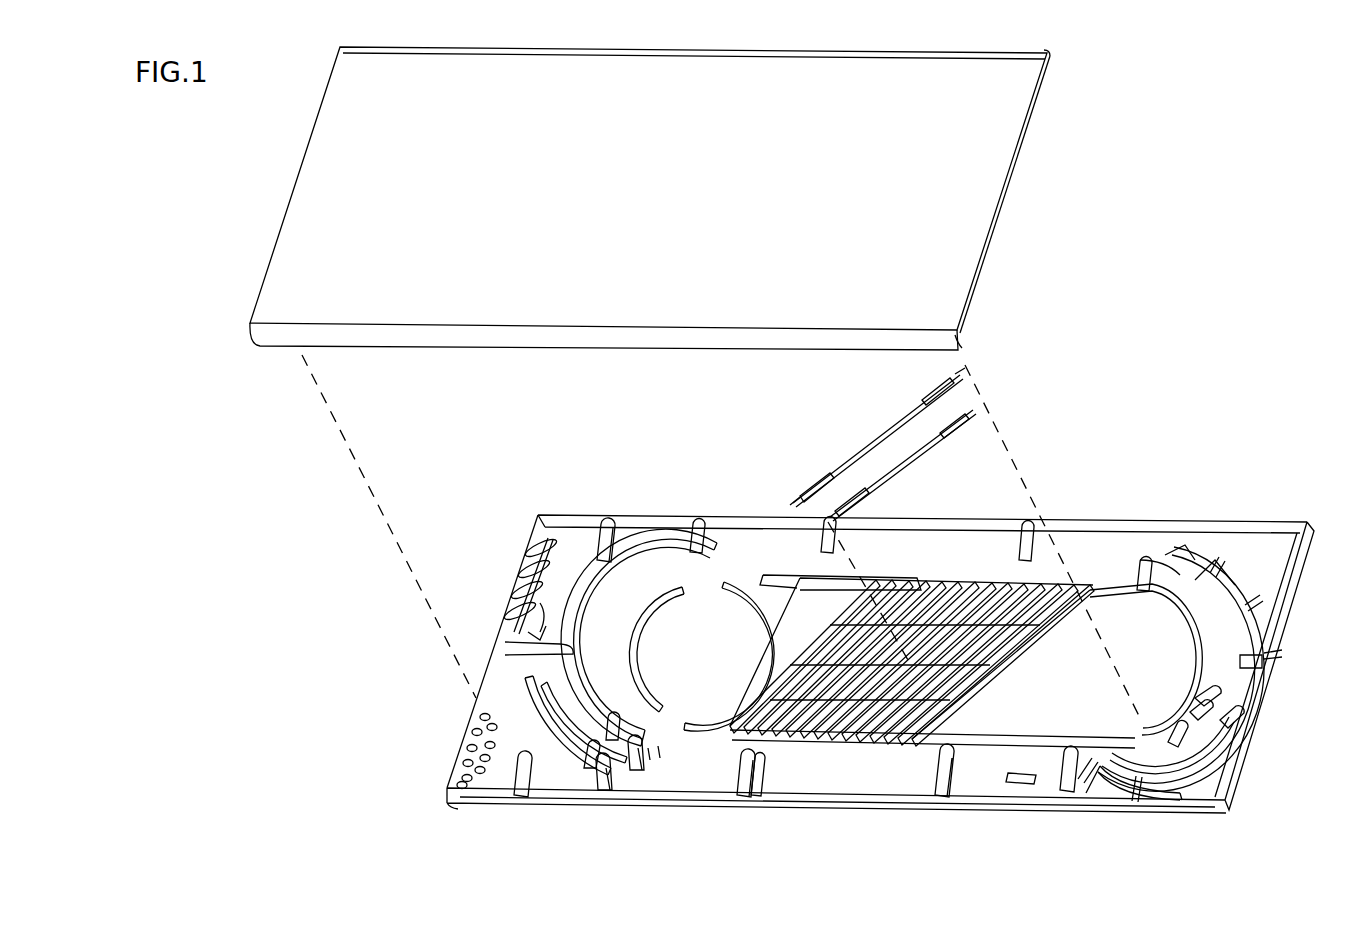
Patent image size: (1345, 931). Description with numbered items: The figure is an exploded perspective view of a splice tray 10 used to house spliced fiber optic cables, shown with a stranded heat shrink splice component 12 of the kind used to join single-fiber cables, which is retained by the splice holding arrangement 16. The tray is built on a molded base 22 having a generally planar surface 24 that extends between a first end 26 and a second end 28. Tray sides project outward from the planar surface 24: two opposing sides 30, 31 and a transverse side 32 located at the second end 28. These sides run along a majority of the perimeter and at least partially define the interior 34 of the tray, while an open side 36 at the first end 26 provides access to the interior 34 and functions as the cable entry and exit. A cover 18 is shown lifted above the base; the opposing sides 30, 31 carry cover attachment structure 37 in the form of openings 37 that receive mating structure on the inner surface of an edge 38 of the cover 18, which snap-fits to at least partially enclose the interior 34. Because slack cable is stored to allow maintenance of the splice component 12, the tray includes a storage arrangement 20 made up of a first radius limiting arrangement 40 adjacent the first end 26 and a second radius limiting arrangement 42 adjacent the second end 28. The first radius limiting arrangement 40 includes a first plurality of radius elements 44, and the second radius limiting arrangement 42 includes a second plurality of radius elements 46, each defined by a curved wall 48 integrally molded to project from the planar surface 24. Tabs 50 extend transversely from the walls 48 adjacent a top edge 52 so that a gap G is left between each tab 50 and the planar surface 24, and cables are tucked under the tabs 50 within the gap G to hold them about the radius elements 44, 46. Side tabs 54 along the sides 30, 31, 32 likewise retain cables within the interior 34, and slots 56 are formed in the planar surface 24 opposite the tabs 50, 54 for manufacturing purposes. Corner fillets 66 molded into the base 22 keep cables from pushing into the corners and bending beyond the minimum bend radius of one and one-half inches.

The splice tray 10 is at (1181, 437).
The stranded heat shrink splice component 12 is at (880, 477).
The splice holding arrangement 16 is at (1101, 545).
The cover 18 is at (990, 152).
The storage arrangement 20 is at (701, 778).
The base 22 is at (730, 545).
The planar surface 24 is at (640, 535).
The first end 26 is at (506, 672).
The second end 28 is at (1262, 636).
The opposing side 30 is at (1075, 520).
The opposing side 31 is at (877, 800).
The transverse side 32 is at (1265, 676).
The interior 34 is at (724, 639).
The open side 36 is at (510, 624).
The cover attachment structure 37 is at (690, 528).
The edge 38 is at (1052, 58).
The first radius limiting arrangement 40 is at (590, 471).
The second radius limiting arrangement 42 is at (1269, 495).
The first plurality of radius elements 44 is at (578, 757).
The second plurality of radius elements 46 is at (1130, 770).
The curved wall 48 is at (560, 752).
The tabs 50 is at (638, 752).
The top edge 52 is at (593, 753).
The side tabs 54 is at (748, 752).
The slots 56 is at (762, 778).
The corner fillets 66 is at (1275, 557).
The gap G is at (668, 768).